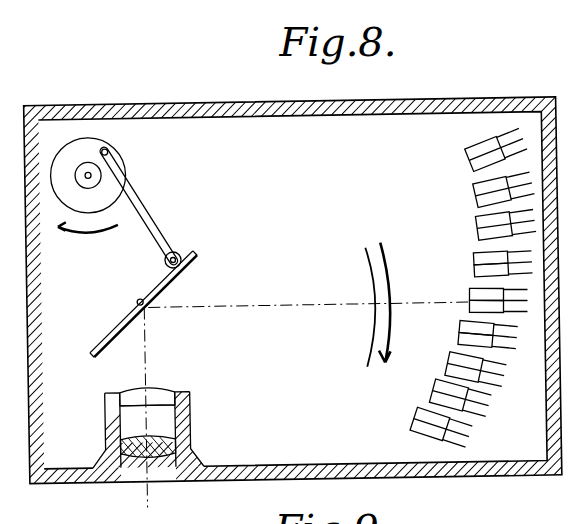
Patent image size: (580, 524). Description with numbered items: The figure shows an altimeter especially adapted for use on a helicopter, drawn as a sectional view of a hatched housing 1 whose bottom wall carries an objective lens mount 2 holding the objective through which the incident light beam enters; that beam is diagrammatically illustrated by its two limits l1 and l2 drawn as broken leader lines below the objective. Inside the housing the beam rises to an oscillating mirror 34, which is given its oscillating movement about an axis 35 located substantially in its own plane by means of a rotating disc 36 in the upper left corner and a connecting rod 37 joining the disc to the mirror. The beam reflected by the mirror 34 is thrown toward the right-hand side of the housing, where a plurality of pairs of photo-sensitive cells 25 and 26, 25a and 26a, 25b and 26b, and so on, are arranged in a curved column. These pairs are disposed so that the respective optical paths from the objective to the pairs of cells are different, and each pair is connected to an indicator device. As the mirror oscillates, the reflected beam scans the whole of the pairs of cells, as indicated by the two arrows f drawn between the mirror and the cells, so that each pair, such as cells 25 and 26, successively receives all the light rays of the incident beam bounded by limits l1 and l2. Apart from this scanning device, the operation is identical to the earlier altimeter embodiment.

The housing 1 is at (493, 110).
The objective lens mount 2 is at (155, 457).
The incident light beam limit l1 is at (117, 457).
The incident light beam limit l2 is at (176, 457).
The oscillating mirror 34 is at (181, 272).
The axis 35 is at (138, 297).
The rotating disc 36 is at (111, 149).
The connecting rod 37 is at (139, 201).
The arrows f is at (392, 302).
The photo-sensitive cell 25 is at (477, 300).
The photo-sensitive cell 26 is at (480, 311).
The photo-sensitive cell 25a is at (482, 263).
The photo-sensitive cell 26a is at (485, 273).
The photo-sensitive cell 25b is at (467, 331).
The photo-sensitive cell 26b is at (469, 341).